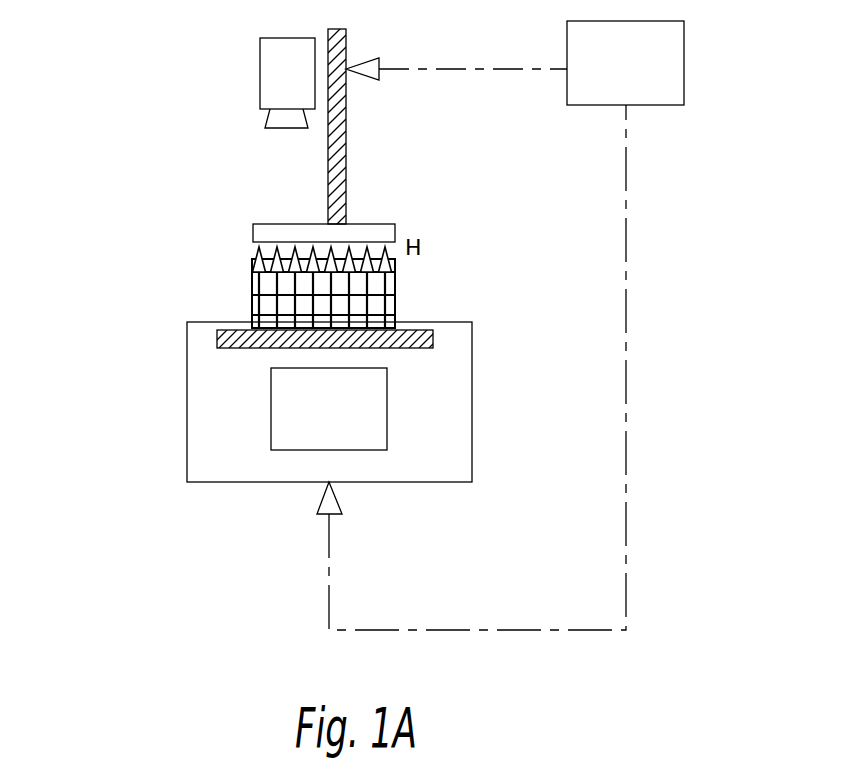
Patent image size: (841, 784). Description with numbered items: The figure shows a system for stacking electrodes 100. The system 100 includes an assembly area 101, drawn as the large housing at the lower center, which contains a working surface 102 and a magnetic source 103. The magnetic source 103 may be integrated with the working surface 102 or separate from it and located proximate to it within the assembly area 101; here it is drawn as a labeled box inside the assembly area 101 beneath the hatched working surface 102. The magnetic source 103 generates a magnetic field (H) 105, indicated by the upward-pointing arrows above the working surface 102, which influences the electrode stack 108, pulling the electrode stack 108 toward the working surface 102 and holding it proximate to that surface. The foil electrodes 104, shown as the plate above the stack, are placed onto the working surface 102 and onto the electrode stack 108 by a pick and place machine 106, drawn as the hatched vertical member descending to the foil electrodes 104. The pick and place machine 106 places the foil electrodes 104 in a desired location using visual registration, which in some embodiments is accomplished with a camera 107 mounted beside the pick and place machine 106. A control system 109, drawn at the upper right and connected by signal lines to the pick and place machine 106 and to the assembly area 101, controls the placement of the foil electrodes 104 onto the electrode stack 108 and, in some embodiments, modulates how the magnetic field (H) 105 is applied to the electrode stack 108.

The system for stacking electrodes 100 is at (118, 169).
The assembly area 101 is at (214, 484).
The working surface 102 is at (433, 340).
The magnetic source 103 is at (388, 386).
The foil electrodes 104 is at (253, 233).
The magnetic field (H) 105 is at (395, 283).
The pick and place machine 106 is at (328, 175).
The camera 107 is at (260, 50).
The electrode stack 108 is at (252, 293).
The control system 109 is at (684, 32).